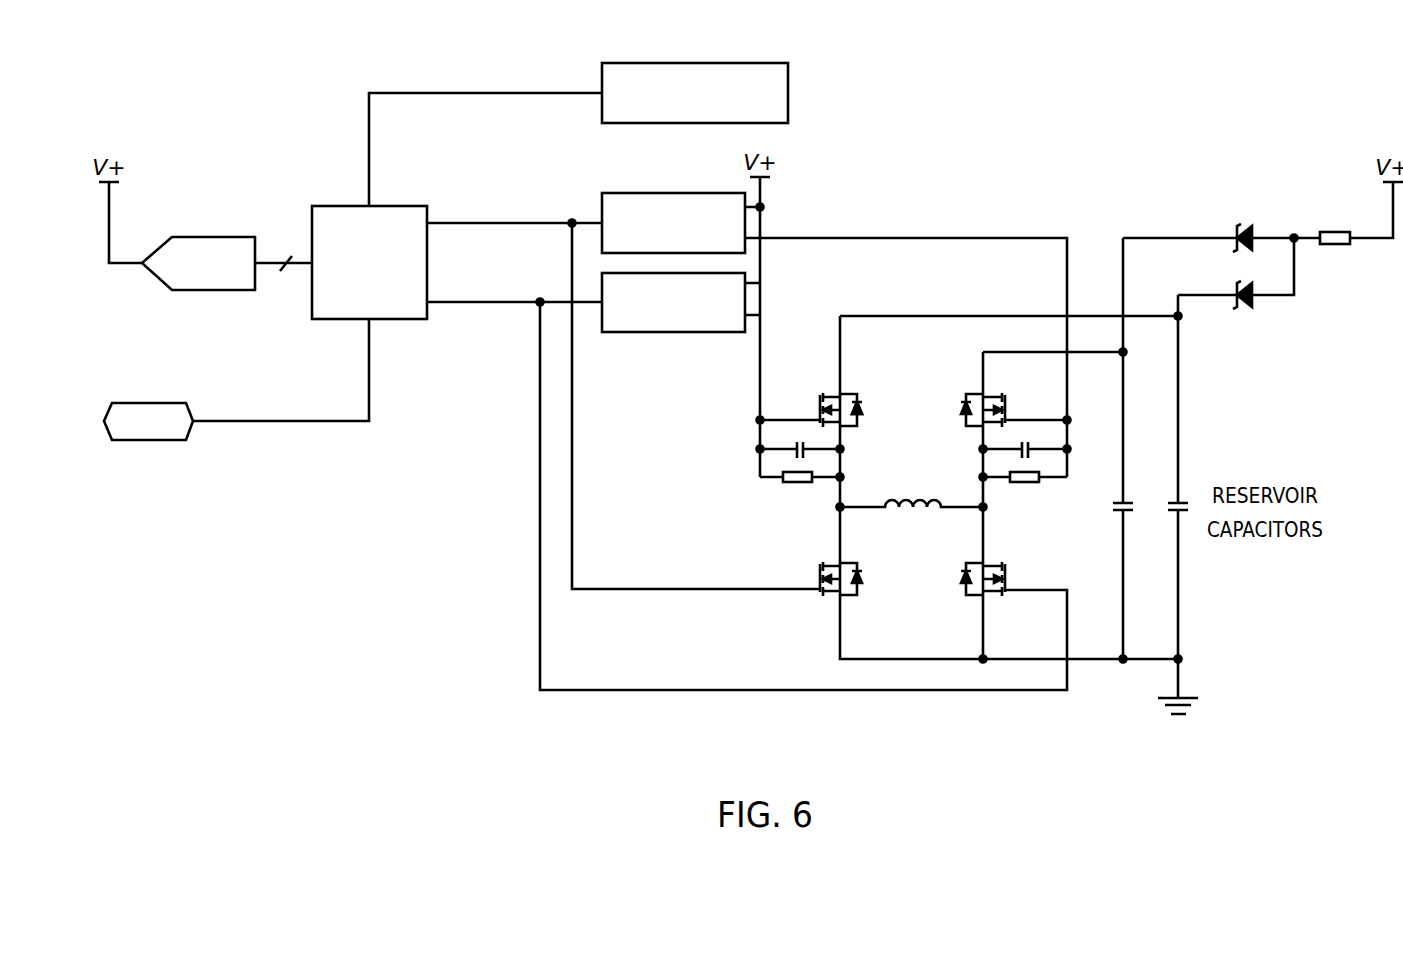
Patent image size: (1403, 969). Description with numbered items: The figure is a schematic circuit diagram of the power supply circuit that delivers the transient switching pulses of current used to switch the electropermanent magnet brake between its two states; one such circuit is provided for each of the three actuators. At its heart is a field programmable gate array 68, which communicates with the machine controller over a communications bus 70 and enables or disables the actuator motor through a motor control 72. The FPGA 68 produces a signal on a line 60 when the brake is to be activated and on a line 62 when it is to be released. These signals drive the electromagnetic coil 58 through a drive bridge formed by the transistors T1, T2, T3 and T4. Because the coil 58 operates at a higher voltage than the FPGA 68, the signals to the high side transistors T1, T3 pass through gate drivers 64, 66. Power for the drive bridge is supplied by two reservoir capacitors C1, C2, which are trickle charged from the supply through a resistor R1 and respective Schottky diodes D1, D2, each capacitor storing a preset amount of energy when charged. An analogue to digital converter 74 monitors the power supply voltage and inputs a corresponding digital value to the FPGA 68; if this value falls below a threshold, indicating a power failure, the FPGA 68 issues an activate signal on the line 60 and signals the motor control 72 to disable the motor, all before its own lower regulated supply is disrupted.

The electromagnetic coil 58 is at (905, 504).
The activate line 60 is at (550, 222).
The release line 62 is at (500, 305).
The gate driver 64 is at (630, 193).
The gate driver 66 is at (672, 335).
The field programmable gate array 68 is at (333, 206).
The communications bus 70 is at (170, 441).
The motor control 72 is at (740, 63).
The analogue to digital converter 74 is at (200, 290).
The transistor T1 is at (858, 400).
The transistor T2 is at (966, 592).
The transistor T3 is at (963, 410).
The transistor T4 is at (858, 568).
The Schottky diode D1 is at (1250, 308).
The Schottky diode D2 is at (1250, 222).
The resistor R1 is at (1338, 246).
The reservoir capacitor C1 is at (1183, 513).
The reservoir capacitor C2 is at (1128, 513).